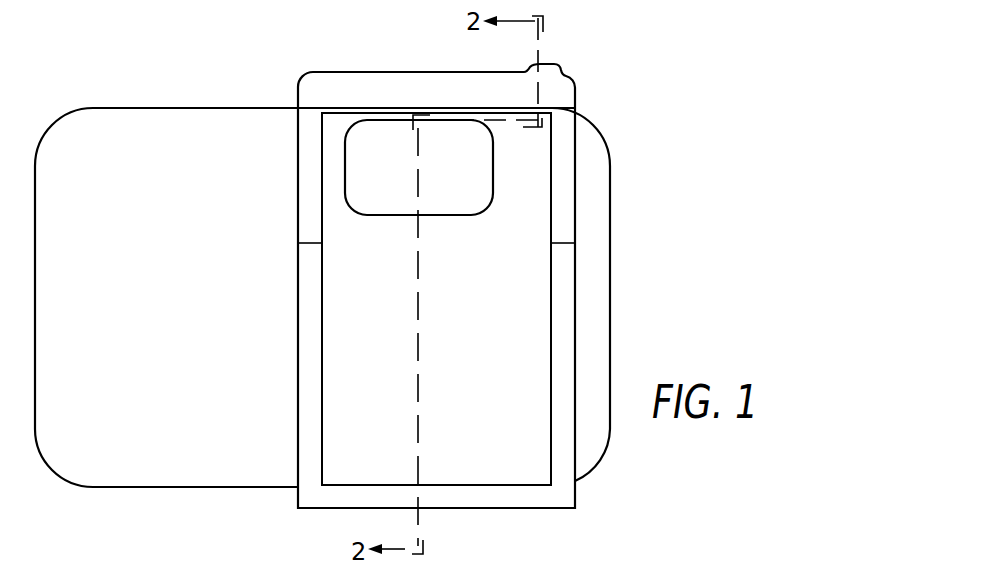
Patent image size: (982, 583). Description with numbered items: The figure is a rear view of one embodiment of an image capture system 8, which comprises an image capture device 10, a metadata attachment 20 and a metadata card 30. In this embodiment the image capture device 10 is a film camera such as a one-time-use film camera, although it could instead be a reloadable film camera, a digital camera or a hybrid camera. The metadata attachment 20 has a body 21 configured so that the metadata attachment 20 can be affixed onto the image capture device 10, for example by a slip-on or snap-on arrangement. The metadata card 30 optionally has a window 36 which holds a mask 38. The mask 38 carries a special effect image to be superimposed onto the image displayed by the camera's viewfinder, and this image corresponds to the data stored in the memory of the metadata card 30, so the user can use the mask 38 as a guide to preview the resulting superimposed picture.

The image capture system 8 is at (246, 84).
The image capture device 10 is at (115, 108).
The metadata attachment 20 is at (545, 515).
The body 21 is at (343, 72).
The metadata card 30 is at (551, 157).
The window 36 is at (493, 178).
The mask 38 is at (470, 174).